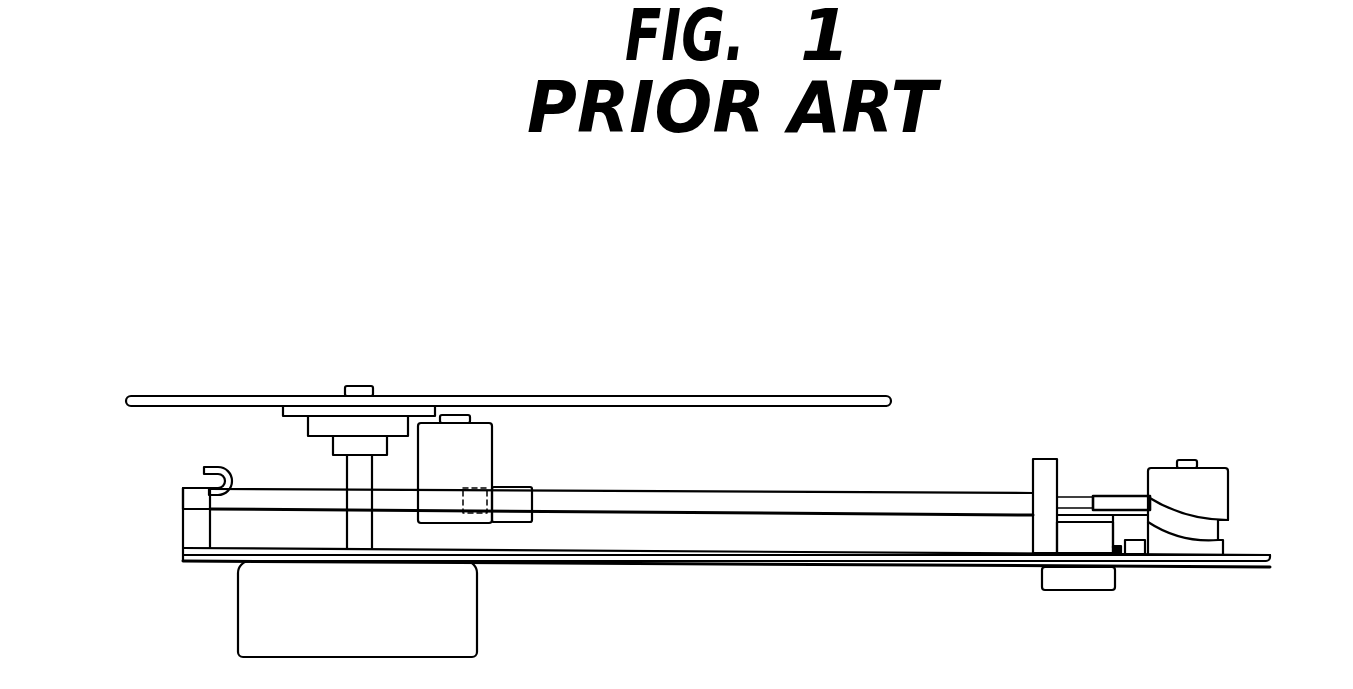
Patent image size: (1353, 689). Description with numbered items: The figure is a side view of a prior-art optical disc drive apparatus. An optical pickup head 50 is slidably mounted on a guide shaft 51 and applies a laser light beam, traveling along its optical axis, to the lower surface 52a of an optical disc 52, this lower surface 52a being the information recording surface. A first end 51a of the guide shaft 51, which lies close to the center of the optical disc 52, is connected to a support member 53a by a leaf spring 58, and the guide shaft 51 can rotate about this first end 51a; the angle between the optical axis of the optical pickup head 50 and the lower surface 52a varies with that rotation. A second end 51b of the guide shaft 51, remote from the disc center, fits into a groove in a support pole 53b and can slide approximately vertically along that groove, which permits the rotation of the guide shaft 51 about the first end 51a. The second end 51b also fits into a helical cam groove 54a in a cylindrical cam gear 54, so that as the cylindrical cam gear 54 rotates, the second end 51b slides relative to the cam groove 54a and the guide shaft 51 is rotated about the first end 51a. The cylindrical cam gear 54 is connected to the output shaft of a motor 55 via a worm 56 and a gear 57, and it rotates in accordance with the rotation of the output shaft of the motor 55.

The optical pickup head 50 is at (493, 448).
The guide shaft 51 is at (937, 492).
The first end of the guide shaft 51a is at (182, 502).
The second end of the guide shaft 51b is at (1114, 495).
The optical disc 52 is at (633, 399).
The lower surface of the optical disc 52a is at (757, 409).
The support member 53a is at (182, 536).
The support pole 53b is at (1045, 458).
The cylindrical cam gear 54 is at (1213, 466).
The helical cam groove 54a is at (1220, 528).
The motor 55 is at (1070, 593).
The worm 56 is at (1120, 568).
The gear 57 is at (1137, 568).
The leaf spring 58 is at (204, 461).